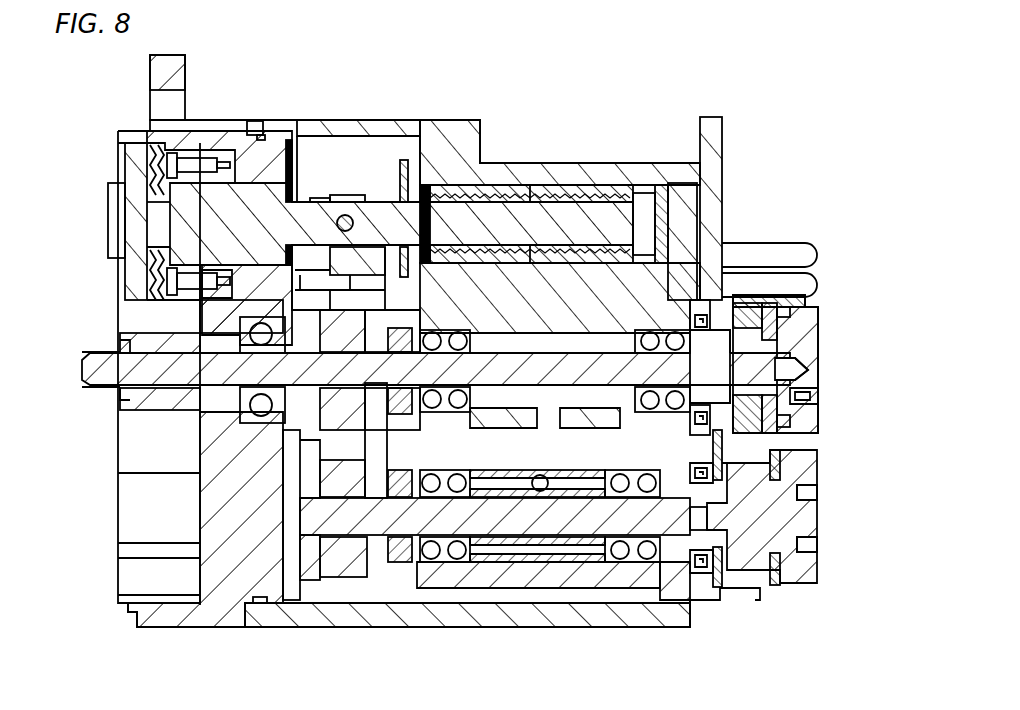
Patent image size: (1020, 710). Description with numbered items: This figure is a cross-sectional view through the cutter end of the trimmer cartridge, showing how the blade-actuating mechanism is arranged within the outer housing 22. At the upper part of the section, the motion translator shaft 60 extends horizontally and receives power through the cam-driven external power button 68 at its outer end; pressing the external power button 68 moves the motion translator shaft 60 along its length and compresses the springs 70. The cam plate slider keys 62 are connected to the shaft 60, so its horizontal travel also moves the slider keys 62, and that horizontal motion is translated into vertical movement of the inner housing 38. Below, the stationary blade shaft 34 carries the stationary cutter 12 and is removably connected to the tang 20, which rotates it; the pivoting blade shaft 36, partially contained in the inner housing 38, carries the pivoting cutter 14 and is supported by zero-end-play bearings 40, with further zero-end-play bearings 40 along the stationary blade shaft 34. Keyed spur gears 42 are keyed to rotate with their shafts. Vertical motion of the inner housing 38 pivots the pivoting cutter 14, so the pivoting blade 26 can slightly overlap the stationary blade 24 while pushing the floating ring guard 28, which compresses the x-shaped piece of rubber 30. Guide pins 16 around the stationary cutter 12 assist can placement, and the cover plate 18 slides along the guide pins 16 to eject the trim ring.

The stationary cutter 12 is at (822, 335).
The pivoting cutter 14 is at (827, 563).
The guide pins 16 is at (815, 293).
The cover plate 18 is at (718, 153).
The tang 20 is at (84, 382).
The outer housing 22 is at (137, 612).
The stationary blade 24 is at (733, 433).
The pivoting blade 26 is at (775, 585).
The floating ring guard 28 is at (777, 433).
The piece of rubber 30 is at (815, 402).
The stationary blade shaft 34 is at (718, 379).
The pivoting blade shaft 36 is at (668, 528).
The inner housing 38 is at (670, 607).
The zero-end-play bearings 40 is at (440, 535).
The keyed spur gears 42 is at (283, 493).
The motion translator shaft 60 is at (261, 234).
The cam plate slider keys 62 is at (372, 257).
The external power button 68 is at (110, 215).
The springs 70 is at (153, 185).